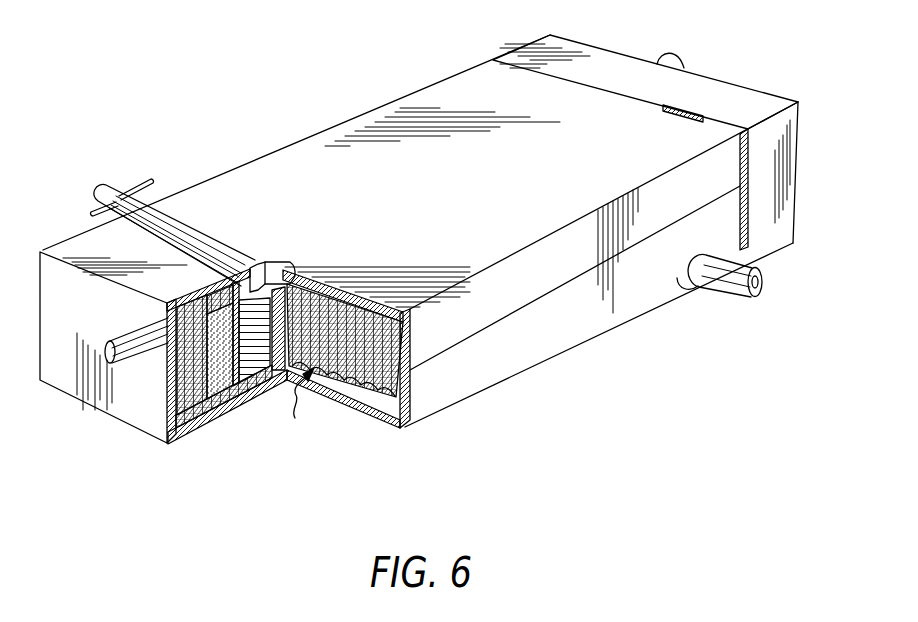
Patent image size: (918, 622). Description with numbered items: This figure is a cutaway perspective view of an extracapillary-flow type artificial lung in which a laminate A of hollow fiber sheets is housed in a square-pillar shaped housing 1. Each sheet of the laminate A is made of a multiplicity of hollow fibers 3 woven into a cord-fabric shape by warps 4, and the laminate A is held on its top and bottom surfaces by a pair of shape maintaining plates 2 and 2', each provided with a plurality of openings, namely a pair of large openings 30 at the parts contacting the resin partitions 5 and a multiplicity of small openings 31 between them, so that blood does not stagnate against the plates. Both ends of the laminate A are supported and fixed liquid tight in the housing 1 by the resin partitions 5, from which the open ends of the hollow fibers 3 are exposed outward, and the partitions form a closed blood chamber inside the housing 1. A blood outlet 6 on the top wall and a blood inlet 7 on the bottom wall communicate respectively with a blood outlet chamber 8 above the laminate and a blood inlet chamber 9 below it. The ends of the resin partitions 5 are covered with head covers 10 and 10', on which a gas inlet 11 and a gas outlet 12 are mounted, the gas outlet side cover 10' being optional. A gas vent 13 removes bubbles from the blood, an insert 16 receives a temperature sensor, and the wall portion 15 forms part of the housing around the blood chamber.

The housing 1 is at (558, 327).
The shape maintaining plate 2 is at (344, 408).
The shape maintaining plate 2' is at (298, 324).
The hollow fibers 3 is at (255, 380).
The warps 4 is at (262, 370).
The resin partition 5 is at (233, 400).
The blood outlet 6 is at (98, 188).
The blood inlet 7 is at (762, 282).
The blood outlet chamber 8 is at (283, 283).
The blood inlet chamber 9 is at (387, 403).
The head cover 10 is at (126, 400).
The head cover 10' is at (645, 142).
The gas inlet 11 is at (110, 364).
The gas outlet 12 is at (678, 63).
The gas vent 13 is at (148, 180).
The front wall 15 is at (405, 390).
The insert for a temperature sensor 16 is at (89, 213).
The large openings 30 is at (248, 292).
The small openings 31 is at (338, 288).
The laminate of hollow fiber sheets A is at (300, 404).